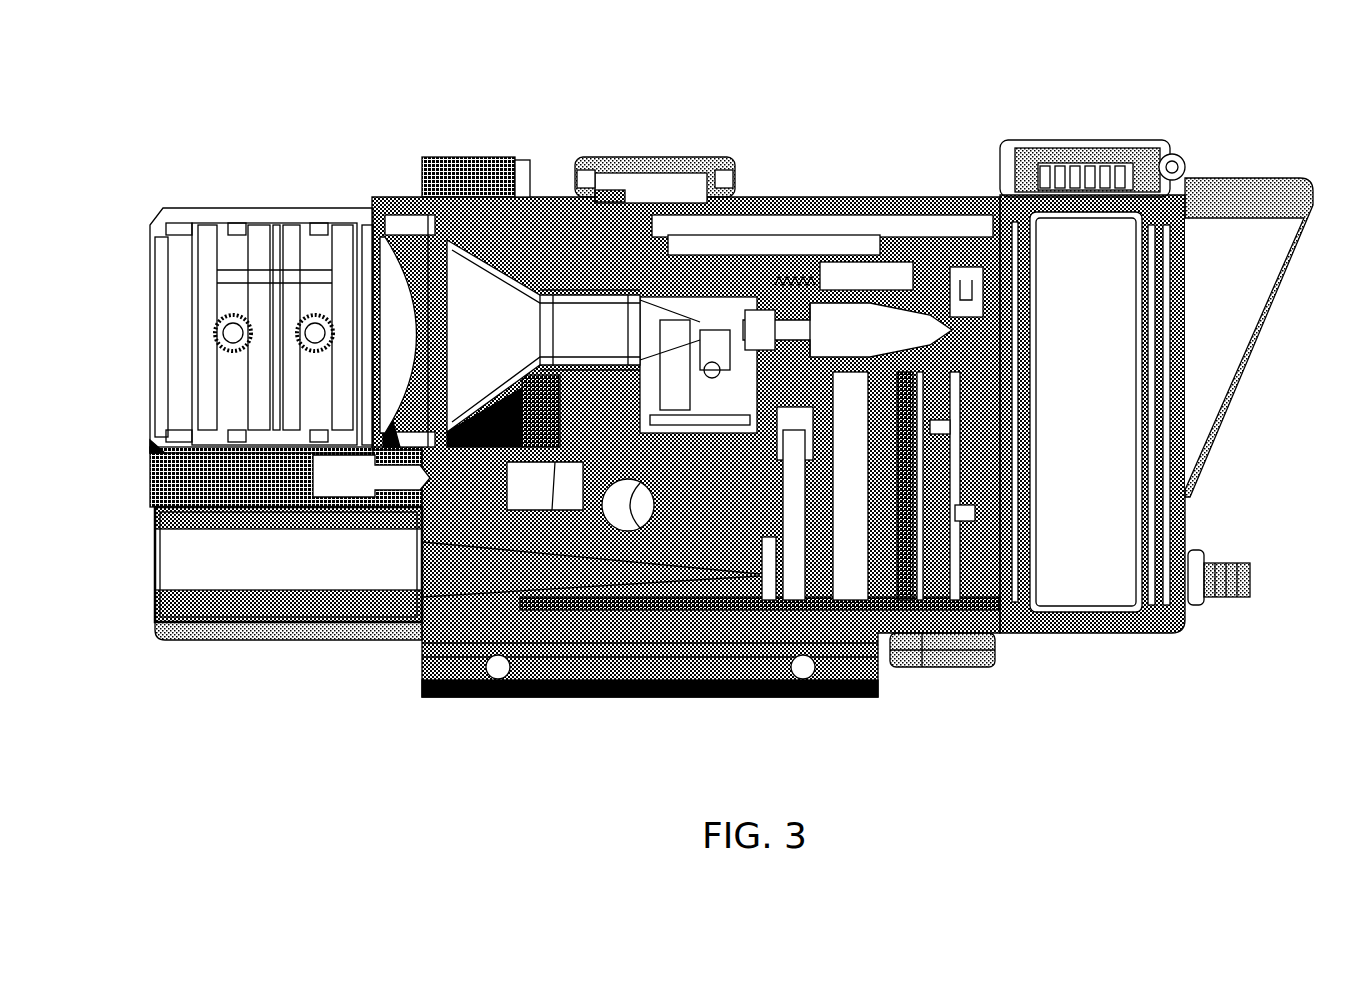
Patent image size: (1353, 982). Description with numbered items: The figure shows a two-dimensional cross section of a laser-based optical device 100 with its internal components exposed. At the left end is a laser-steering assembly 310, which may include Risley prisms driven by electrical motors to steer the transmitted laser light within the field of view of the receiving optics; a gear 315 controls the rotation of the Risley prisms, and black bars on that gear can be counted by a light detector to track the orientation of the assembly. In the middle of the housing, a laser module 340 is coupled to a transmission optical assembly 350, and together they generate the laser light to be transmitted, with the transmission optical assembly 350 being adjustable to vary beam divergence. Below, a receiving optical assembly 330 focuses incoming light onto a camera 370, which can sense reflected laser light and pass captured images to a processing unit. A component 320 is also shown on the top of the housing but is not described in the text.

The laser-based optical device 100 is at (731, 356).
The laser-steering assembly 310 is at (244, 271).
The gear 315 is at (198, 301).
The switch 320 is at (627, 123).
The receiving optical assembly 330 is at (288, 597).
The laser module 340 is at (853, 342).
The transmission optical assembly 350 is at (478, 341).
The camera 370 is at (771, 653).